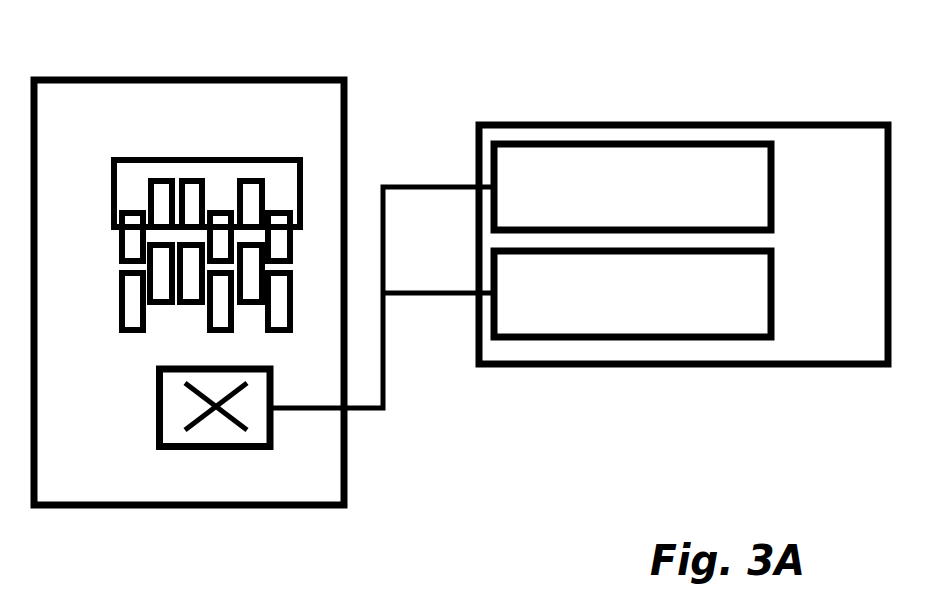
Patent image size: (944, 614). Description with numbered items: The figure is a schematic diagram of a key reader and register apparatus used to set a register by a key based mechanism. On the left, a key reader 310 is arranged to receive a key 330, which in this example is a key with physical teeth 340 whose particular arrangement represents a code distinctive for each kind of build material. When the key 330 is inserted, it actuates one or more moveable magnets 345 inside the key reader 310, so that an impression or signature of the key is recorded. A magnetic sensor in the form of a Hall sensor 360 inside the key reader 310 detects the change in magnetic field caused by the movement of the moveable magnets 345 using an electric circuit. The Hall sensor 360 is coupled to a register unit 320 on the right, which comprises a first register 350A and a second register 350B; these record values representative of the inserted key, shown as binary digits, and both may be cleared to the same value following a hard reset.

The key reader 310 is at (187, 78).
The register unit 320 is at (597, 120).
The key 330 is at (180, 157).
The teeth 340 is at (120, 233).
The moveable magnets 345 is at (118, 295).
The first register 350A is at (777, 182).
The second register 350B is at (777, 292).
The Hall sensor 360 is at (158, 418).